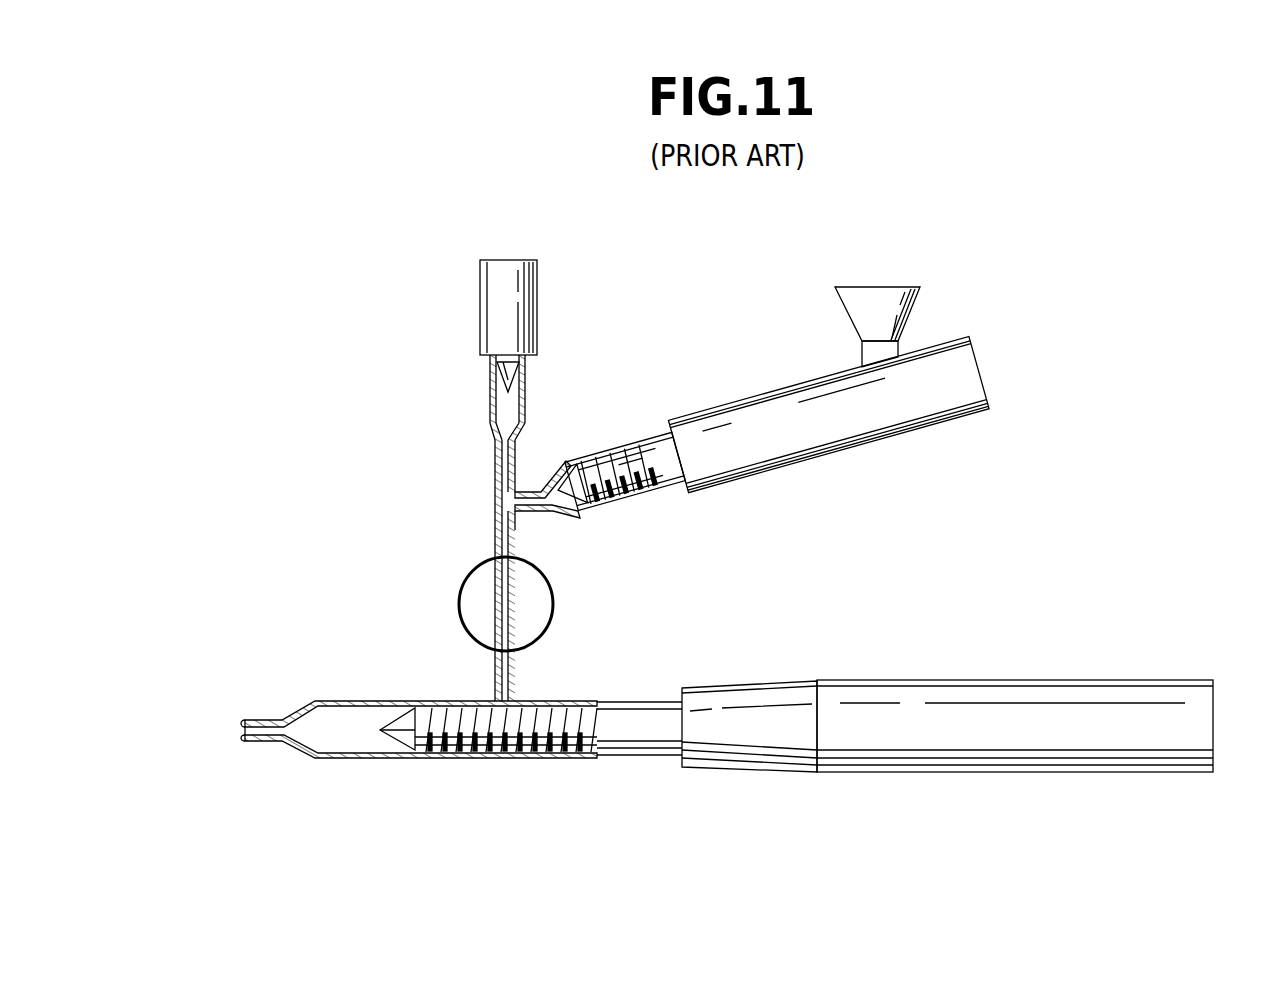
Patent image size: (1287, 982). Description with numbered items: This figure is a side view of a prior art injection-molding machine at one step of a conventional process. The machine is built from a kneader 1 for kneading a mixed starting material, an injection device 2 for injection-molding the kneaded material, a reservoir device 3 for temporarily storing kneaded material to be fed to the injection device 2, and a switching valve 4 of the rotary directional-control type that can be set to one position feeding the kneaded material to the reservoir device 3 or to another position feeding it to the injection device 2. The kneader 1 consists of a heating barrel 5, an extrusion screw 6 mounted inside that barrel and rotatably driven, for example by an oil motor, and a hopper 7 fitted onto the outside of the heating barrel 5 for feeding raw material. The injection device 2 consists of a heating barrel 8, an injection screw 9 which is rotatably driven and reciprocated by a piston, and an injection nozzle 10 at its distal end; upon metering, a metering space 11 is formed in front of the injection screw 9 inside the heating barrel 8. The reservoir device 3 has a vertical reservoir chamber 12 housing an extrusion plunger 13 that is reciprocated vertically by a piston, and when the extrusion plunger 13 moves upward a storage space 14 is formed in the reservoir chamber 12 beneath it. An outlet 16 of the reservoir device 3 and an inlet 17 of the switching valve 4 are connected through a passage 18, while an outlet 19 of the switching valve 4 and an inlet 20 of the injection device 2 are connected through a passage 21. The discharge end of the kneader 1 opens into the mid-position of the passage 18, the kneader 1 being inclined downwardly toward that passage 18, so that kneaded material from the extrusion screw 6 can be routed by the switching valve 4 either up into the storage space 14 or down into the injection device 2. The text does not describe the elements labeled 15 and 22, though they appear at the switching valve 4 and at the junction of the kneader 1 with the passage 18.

The kneader 1 is at (768, 405).
The injection device 2 is at (637, 768).
The reservoir device 3 is at (476, 287).
The switching valve 4 is at (456, 578).
The heating barrel 5 is at (662, 450).
The extrusion screw 6 is at (630, 500).
The hopper 7 is at (877, 298).
The heating barrel 8 is at (412, 758).
The injection screw 9 is at (494, 758).
The injection nozzle 10 is at (263, 744).
The metering space 11 is at (337, 758).
The reservoir chamber 12 is at (490, 385).
The extrusion plunger 13 is at (516, 368).
The storage space 14 is at (498, 420).
The right tube wall 15 is at (517, 620).
The outlet 16 is at (495, 465).
The inlet 17 is at (517, 543).
The passage 18 is at (495, 508).
The outlet 19 is at (495, 660).
The inlet 20 is at (517, 692).
The passage 21 is at (495, 692).
The side branch 22 is at (527, 490).